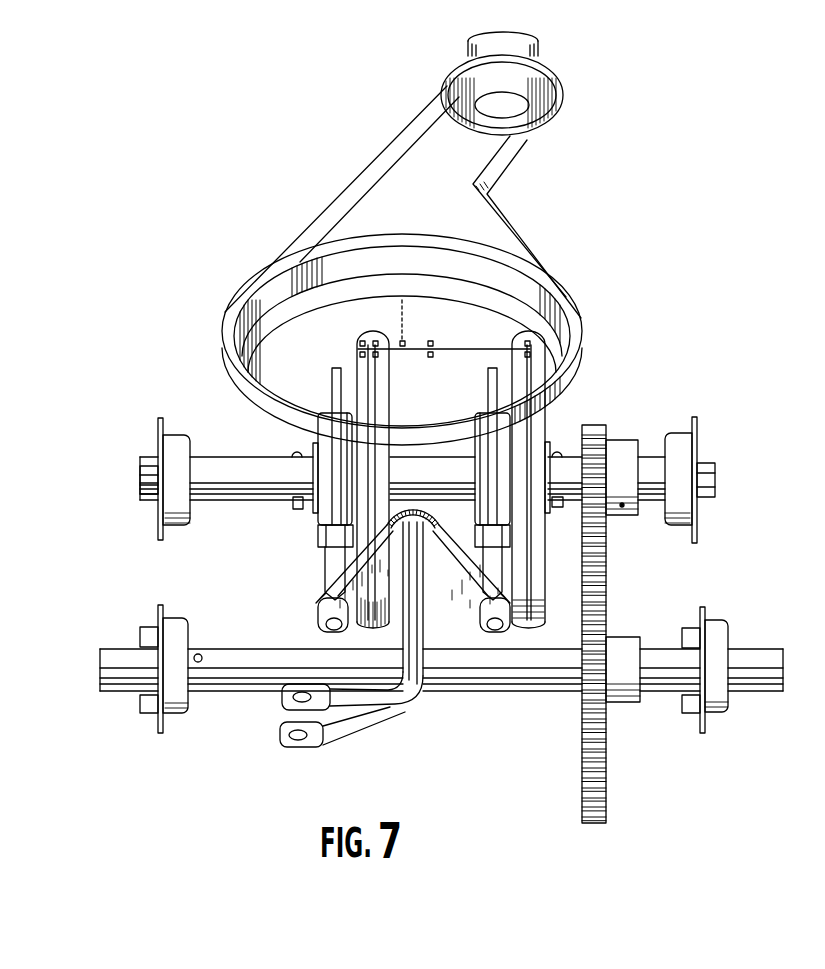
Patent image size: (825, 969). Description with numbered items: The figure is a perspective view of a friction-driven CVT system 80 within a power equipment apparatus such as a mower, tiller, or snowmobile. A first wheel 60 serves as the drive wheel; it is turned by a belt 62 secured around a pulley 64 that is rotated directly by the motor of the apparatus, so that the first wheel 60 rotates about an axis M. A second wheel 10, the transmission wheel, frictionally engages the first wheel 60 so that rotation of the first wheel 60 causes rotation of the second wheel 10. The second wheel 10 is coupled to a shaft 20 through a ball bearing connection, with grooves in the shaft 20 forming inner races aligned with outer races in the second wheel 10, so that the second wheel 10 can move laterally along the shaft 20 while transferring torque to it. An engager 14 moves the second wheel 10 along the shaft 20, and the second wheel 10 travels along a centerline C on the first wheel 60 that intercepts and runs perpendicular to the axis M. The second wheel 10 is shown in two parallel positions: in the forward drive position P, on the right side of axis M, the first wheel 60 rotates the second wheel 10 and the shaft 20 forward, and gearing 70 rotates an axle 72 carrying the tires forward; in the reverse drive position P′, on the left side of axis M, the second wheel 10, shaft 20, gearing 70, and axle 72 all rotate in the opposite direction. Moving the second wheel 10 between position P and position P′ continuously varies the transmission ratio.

The CVT system 80 is at (233, 143).
The first wheel 60 is at (302, 305).
The belt 62 is at (307, 231).
The pulley 64 is at (512, 113).
The axis M is at (407, 341).
The centerline C is at (477, 348).
The second wheel 10 is at (530, 372).
The engager 14 is at (335, 450).
The reverse drive position P′ is at (343, 468).
The forward drive position P is at (512, 448).
The shaft 20 is at (233, 470).
The gearing 70 is at (607, 588).
The axle 72 is at (717, 697).